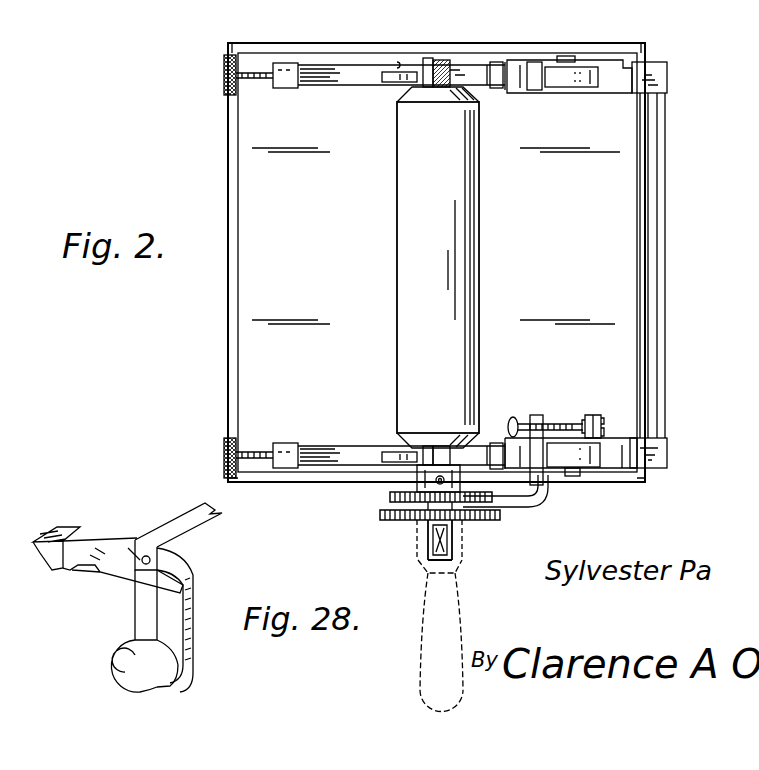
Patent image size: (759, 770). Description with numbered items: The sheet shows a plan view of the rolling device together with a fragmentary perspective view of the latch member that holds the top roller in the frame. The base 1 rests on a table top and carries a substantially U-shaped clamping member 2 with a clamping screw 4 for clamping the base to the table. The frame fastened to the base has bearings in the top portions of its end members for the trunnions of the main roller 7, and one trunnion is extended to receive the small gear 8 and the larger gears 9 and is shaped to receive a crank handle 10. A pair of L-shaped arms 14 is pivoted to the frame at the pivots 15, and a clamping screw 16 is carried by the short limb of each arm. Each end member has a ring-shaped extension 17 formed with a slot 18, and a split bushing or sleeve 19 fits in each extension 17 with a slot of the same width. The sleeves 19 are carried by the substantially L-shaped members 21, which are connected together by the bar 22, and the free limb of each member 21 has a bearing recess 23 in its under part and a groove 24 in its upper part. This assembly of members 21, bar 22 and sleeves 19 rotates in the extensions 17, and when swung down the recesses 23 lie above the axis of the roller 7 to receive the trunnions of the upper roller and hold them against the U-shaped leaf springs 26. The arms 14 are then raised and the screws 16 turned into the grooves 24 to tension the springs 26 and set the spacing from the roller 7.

In FIG. 2, the base 1 is at (232, 357).
In FIG. 2, the clamping member 2 is at (535, 507).
In FIG. 2, the clamping screw 4 is at (597, 412).
In FIG. 2, the main roller 7 is at (465, 220).
In FIG. 2, the small gear 8 is at (390, 497).
In FIG. 2, the larger gears 9 is at (380, 515).
In FIG. 2, the crank handle 10 is at (455, 585).
In FIG. 2, the L-shaped arms 14 is at (285, 88).
In FIG. 2, the pivot 15 is at (385, 82).
In FIG. 2, the clamping screw 16 is at (222, 80).
In FIG. 2, the ring-shaped extension 17 is at (597, 68).
In FIG. 2, the slot 18 is at (535, 92).
In FIG. 2, the split bushing or sleeve 19 is at (565, 56).
In FIG. 28, the split bushing or sleeve 19 is at (138, 648).
In FIG. 2, the L-shaped members 21 is at (667, 75).
In FIG. 28, the L-shaped members 21 is at (195, 638).
In FIG. 2, the bar 22 is at (665, 160).
In FIG. 28, the bar 22 is at (180, 508).
In FIG. 28, the bearing recess 23 is at (78, 575).
In FIG. 28, the groove 24 is at (62, 528).
In FIG. 2, the leaf springs 26 is at (446, 97).